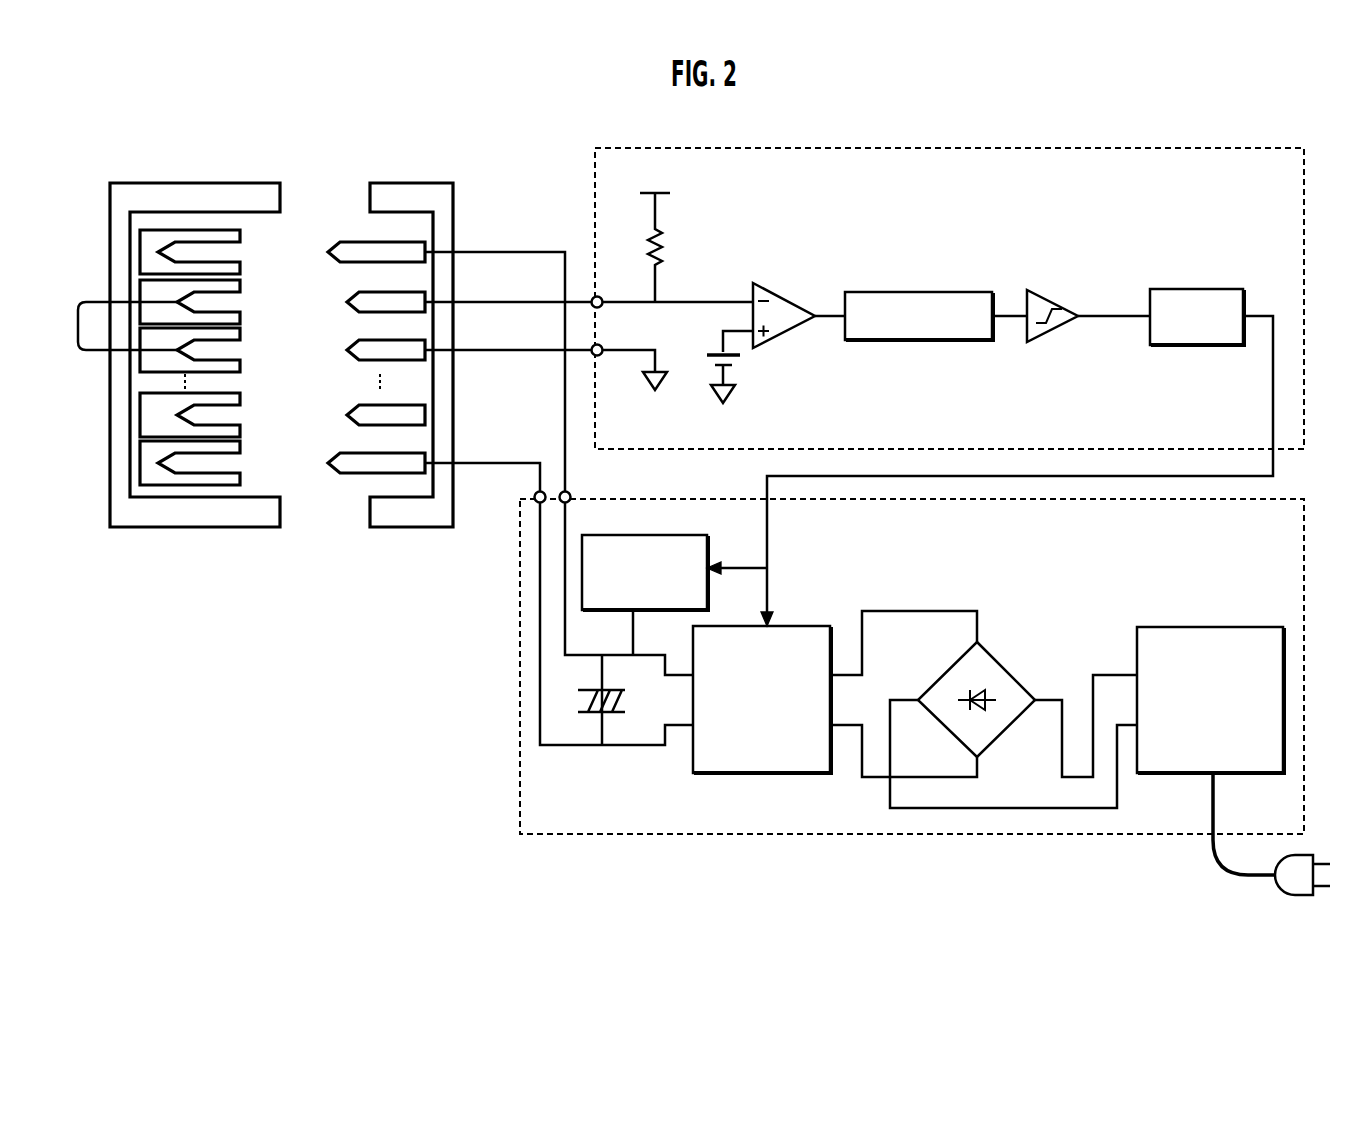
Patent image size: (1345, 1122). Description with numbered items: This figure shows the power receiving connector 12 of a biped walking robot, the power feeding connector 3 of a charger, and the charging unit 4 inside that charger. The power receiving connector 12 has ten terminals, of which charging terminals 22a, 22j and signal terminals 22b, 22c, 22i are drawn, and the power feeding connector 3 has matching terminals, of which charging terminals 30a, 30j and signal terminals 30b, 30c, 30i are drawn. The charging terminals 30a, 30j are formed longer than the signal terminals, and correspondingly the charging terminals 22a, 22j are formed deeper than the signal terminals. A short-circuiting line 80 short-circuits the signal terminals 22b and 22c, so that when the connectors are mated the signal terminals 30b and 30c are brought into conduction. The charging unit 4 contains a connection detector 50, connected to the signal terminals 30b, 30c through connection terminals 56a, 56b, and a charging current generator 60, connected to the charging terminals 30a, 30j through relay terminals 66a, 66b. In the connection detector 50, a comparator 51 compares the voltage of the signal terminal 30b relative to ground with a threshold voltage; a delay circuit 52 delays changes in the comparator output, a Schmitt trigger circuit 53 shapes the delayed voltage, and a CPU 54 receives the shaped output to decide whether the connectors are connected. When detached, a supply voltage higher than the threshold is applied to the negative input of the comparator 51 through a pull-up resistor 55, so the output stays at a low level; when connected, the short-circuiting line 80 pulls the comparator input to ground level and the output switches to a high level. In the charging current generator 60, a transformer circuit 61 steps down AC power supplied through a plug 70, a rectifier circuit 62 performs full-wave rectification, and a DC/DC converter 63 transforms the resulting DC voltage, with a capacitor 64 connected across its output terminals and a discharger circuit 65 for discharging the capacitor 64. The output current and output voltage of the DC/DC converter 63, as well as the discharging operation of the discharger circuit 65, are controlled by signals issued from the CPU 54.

The charging unit 4 is at (955, 138).
The power receiving connector 12 is at (203, 183).
The power feeding connector 3 is at (405, 183).
The short-circuiting line 80 is at (78, 312).
The charging terminal 22a is at (222, 263).
The signal terminal 22b is at (222, 313).
The signal terminal 22c is at (222, 361).
The signal terminal 22i is at (222, 426).
The charging terminal 22j is at (222, 474).
The charging terminal 30a is at (329, 250).
The signal terminal 30b is at (347, 300).
The signal terminal 30c is at (347, 348).
The signal terminal 30i is at (347, 413).
The charging terminal 30j is at (329, 461).
The connection detector 50 is at (1200, 147).
The pull-up resistor 55 is at (664, 243).
The connection terminal 56a is at (601, 297).
The connection terminal 56b is at (601, 354).
The comparator 51 is at (770, 290).
The delay circuit 52 is at (950, 291).
The Schmitt trigger circuit 53 is at (1037, 290).
The CPU 54 is at (1196, 287).
The charging current generator 60 is at (1265, 499).
The relay terminal 66a is at (571, 496).
The relay terminal 66b is at (534, 496).
The discharger circuit 65 is at (640, 534).
The capacitor 64 is at (624, 690).
The DC/DC converter 63 is at (790, 625).
The rectifier circuit 62 is at (998, 659).
The transformer circuit 61 is at (1238, 626).
The plug 70 is at (1300, 853).